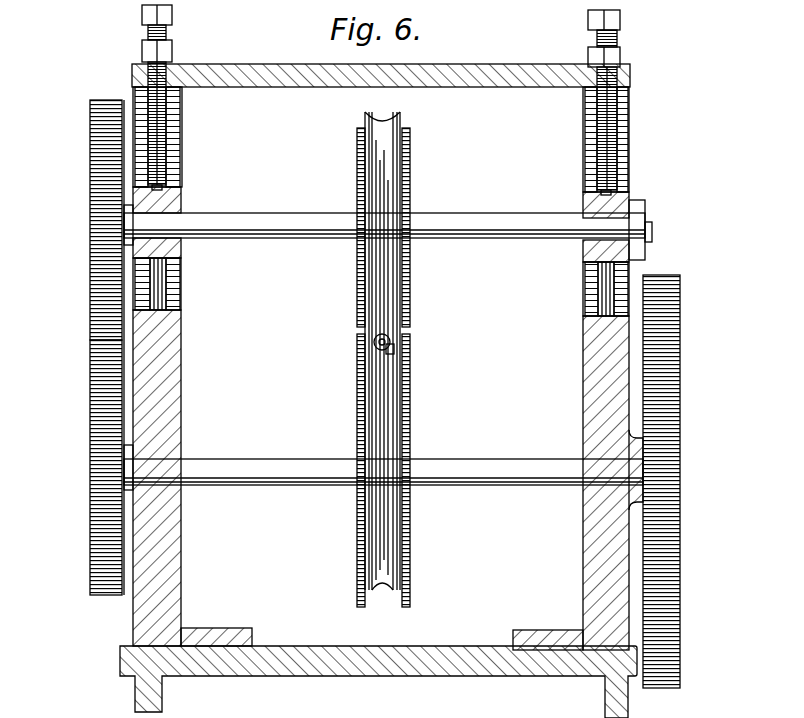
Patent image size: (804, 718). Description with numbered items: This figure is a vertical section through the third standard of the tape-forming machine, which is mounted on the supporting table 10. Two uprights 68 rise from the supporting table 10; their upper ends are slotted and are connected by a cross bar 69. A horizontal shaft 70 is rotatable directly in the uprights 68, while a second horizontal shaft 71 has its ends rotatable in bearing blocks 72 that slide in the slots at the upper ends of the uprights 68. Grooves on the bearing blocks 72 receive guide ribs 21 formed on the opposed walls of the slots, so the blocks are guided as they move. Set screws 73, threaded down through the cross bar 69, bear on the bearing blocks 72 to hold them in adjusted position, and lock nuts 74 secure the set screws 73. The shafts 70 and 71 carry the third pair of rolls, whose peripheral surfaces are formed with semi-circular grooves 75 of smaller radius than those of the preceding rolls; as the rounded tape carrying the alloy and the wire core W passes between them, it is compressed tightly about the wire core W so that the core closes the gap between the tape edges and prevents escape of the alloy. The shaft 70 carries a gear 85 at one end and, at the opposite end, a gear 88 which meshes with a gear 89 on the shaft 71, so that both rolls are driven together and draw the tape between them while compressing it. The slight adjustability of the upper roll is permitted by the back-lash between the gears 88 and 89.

The supporting table 10 is at (150, 690).
The guide ribs 21 is at (160, 300).
The uprights 68 is at (165, 420).
The cross bar 69 is at (272, 72).
The horizontal shaft 70 is at (270, 470).
The second horizontal shaft 71 is at (280, 232).
The bearing blocks 72 is at (181, 198).
The set screws 73 is at (182, 106).
The lock nuts 74 is at (146, 50).
The semi-circular grooves 75 is at (408, 359).
The gear 85 is at (672, 536).
The gear 88 is at (92, 535).
The gear 89 is at (105, 296).
The wire core W is at (392, 337).
The pointer I is at (400, 350).